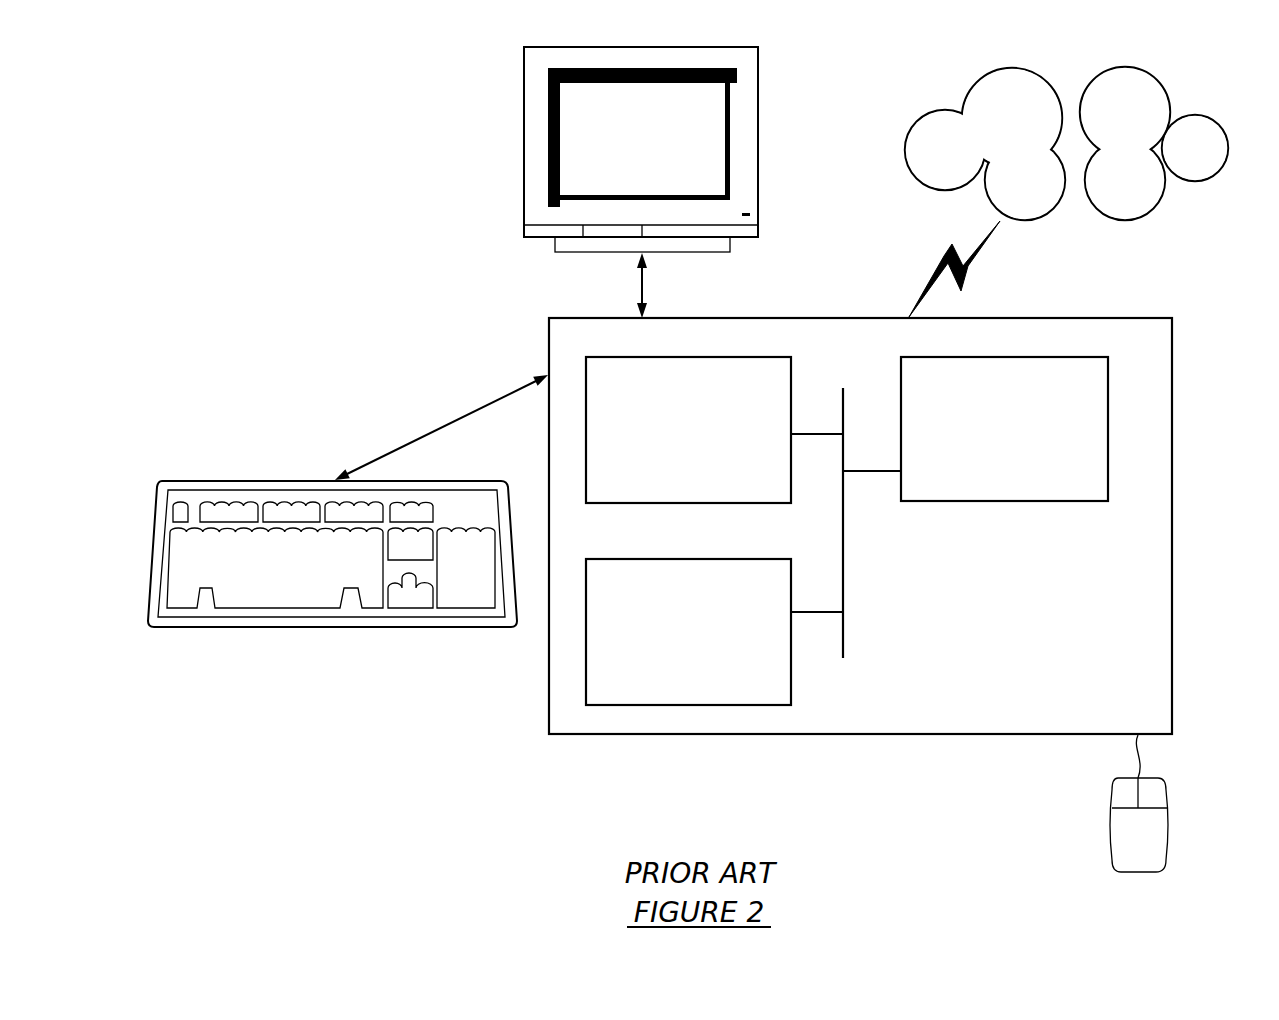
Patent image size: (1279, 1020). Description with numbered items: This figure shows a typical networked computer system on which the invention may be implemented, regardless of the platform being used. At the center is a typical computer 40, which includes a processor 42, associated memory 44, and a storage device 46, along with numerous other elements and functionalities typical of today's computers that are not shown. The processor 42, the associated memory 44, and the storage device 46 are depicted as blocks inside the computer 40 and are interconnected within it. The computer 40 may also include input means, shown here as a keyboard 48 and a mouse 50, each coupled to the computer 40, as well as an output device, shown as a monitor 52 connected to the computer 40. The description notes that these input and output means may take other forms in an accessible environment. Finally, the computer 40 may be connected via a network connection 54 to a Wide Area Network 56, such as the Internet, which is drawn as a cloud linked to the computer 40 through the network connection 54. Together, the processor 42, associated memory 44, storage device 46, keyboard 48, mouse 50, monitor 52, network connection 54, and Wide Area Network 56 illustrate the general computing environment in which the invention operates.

The computer 40 is at (1172, 608).
The processor 42 is at (988, 440).
The associated memory 44 is at (672, 444).
The storage device 46 is at (672, 644).
The keyboard 48 is at (244, 578).
The mouse 50 is at (1122, 848).
The monitor 52 is at (626, 161).
The network connection 54 is at (944, 259).
The Wide Area Network (WAN) 56 is at (1108, 222).